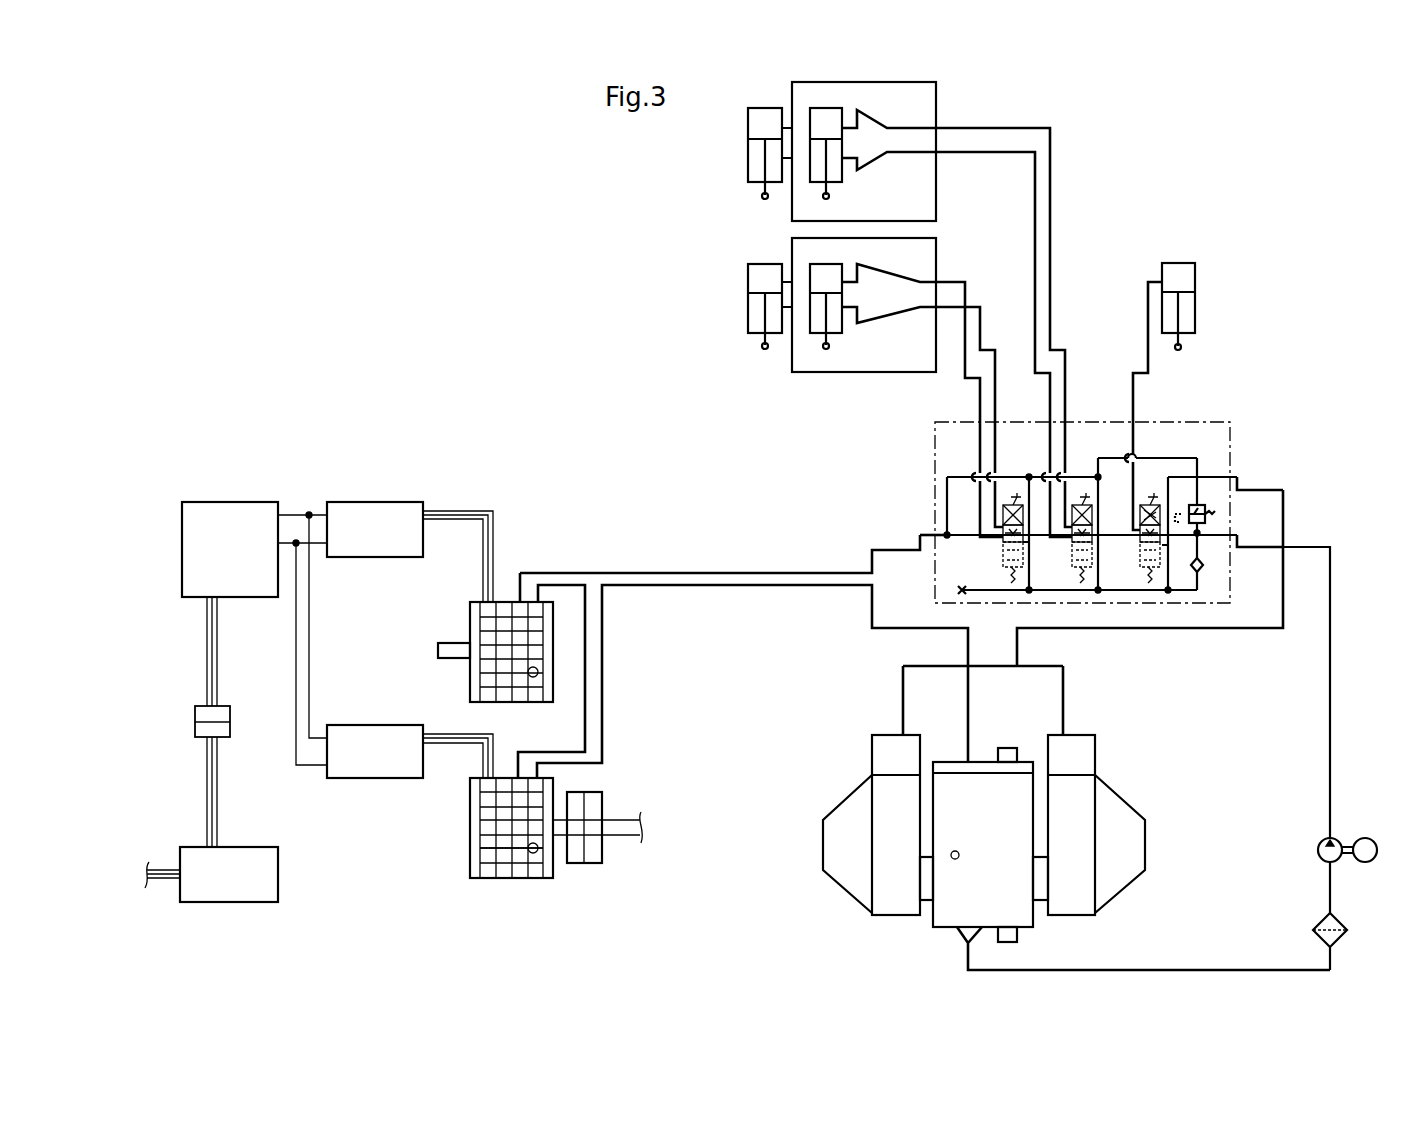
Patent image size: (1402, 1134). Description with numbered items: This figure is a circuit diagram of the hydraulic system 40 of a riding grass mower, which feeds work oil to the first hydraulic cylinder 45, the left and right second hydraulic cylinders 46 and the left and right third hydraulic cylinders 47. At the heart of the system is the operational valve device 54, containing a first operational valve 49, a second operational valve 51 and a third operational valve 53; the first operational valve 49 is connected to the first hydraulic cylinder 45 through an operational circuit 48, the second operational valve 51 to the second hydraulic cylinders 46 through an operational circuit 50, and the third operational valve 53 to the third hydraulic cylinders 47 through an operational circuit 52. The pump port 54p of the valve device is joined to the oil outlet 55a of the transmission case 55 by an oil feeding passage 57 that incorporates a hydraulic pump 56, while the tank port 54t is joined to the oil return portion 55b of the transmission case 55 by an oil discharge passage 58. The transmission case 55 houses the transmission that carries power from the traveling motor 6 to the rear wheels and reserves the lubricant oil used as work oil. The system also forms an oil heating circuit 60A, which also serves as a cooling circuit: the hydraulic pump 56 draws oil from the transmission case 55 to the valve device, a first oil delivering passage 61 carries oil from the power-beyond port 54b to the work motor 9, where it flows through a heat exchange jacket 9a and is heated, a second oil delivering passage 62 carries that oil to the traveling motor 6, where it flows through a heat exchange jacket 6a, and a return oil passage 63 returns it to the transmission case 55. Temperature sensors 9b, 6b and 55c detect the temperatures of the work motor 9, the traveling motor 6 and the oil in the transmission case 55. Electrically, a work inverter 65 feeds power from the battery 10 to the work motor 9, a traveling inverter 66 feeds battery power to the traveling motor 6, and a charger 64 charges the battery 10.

The traveling motor 6 is at (468, 843).
The heat exchange jacket 6a is at (483, 857).
The temperature sensor 6b is at (533, 855).
The work motor 9 is at (468, 626).
The heat exchange jacket 9a is at (505, 600).
The temperature sensor 9b is at (528, 672).
The battery 10 is at (228, 501).
The hydraulic system 40 is at (1222, 226).
The first hydraulic cylinder 45 is at (1195, 315).
The second hydraulic cylinders 46 is at (747, 305).
The third hydraulic cylinders 47 is at (747, 157).
The operational circuit 48 is at (1146, 316).
The first operational valve 49 is at (1141, 557).
The operational circuit 50 is at (964, 362).
The second operational valve 51 is at (1004, 555).
The operational circuit 52 is at (1056, 212).
The third operational valve 53 is at (1073, 555).
The operational valve device 54 is at (1181, 414).
The power-beyond port 54b is at (916, 545).
The pump port 54p is at (1240, 552).
The tank port 54t is at (1240, 478).
The transmission case 55 is at (1022, 925).
The oil outlet 55a is at (958, 932).
The oil return portion 55b is at (900, 726).
The temperature sensor 55c is at (960, 855).
The hydraulic pump 56 is at (1318, 850).
The oil feeding passage 57 is at (1335, 712).
The oil discharge passage 58 is at (1140, 632).
The oil heating circuit 60A is at (697, 545).
The first oil delivering passage 61 is at (756, 572).
The second oil delivering passage 62 is at (582, 686).
The return oil passage 63 is at (712, 590).
The charger 64 is at (280, 870).
The work inverter 65 is at (380, 501).
The traveling inverter 66 is at (345, 780).